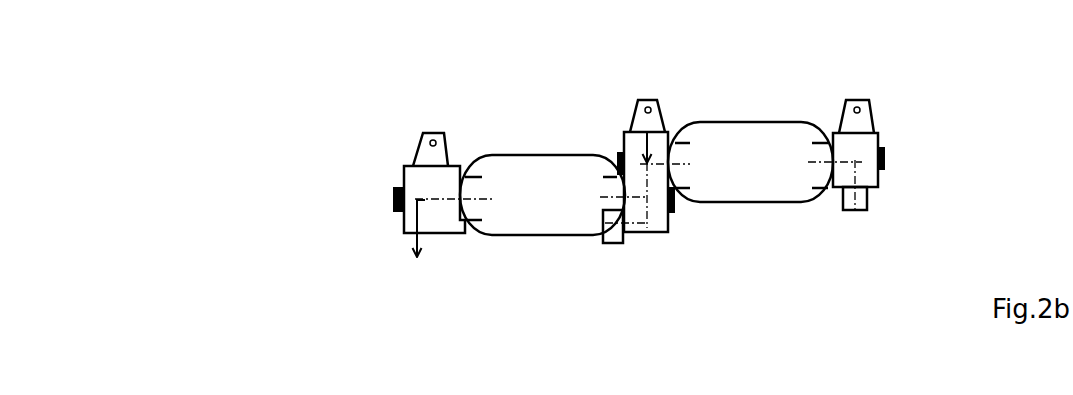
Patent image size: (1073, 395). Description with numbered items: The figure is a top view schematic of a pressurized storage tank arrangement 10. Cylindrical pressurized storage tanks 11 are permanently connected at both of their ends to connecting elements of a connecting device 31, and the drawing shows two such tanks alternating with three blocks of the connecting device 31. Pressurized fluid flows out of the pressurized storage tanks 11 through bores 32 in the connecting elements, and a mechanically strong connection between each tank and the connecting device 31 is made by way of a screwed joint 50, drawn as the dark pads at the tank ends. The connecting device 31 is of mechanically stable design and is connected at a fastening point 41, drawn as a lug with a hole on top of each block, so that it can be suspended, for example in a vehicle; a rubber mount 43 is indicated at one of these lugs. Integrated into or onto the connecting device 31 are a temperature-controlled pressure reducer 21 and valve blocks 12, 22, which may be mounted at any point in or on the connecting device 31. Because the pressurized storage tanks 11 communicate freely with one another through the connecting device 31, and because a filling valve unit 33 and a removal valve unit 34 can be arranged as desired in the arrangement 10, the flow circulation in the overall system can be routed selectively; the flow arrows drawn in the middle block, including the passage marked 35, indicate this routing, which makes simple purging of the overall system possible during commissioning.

The pressurized storage tank arrangement 10 is at (300, 52).
The pressurized storage tank 11 is at (638, 178).
The valve block 12 is at (403, 225).
The pressure reducer 21 is at (414, 164).
The valve block 22 is at (602, 232).
The connecting device 31 is at (671, 221).
The bore 32 is at (856, 169).
The filling valve unit 33 is at (645, 147).
The removal valve unit 34 is at (413, 257).
The flow passage 35 is at (648, 201).
The fastening point 41 is at (437, 131).
The rubber mount 43 is at (850, 102).
The screwed joint 50 is at (393, 198).